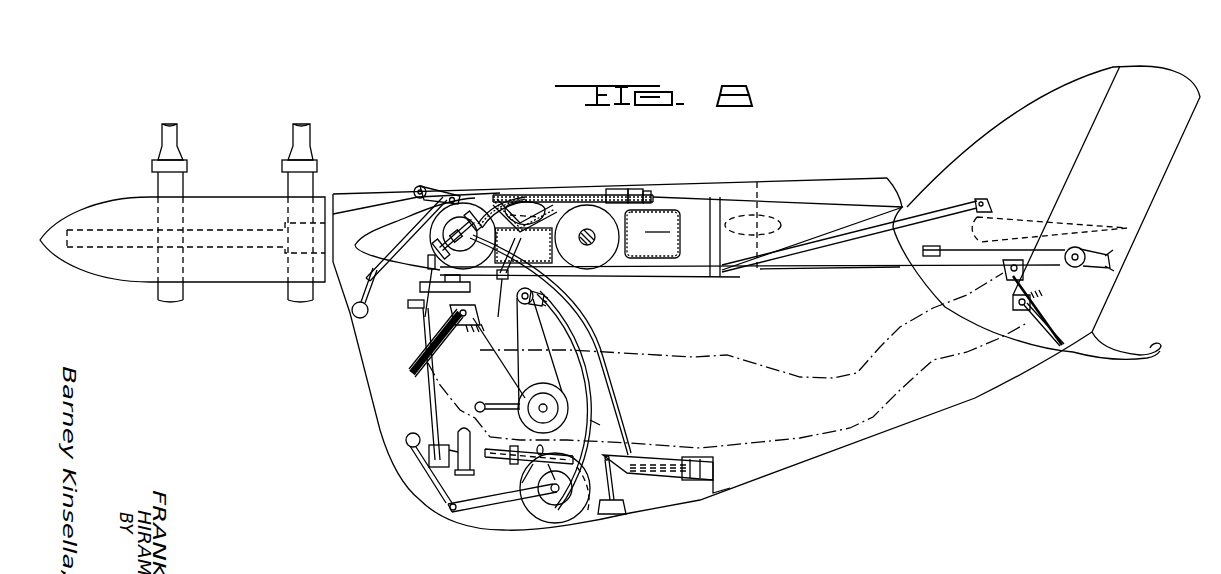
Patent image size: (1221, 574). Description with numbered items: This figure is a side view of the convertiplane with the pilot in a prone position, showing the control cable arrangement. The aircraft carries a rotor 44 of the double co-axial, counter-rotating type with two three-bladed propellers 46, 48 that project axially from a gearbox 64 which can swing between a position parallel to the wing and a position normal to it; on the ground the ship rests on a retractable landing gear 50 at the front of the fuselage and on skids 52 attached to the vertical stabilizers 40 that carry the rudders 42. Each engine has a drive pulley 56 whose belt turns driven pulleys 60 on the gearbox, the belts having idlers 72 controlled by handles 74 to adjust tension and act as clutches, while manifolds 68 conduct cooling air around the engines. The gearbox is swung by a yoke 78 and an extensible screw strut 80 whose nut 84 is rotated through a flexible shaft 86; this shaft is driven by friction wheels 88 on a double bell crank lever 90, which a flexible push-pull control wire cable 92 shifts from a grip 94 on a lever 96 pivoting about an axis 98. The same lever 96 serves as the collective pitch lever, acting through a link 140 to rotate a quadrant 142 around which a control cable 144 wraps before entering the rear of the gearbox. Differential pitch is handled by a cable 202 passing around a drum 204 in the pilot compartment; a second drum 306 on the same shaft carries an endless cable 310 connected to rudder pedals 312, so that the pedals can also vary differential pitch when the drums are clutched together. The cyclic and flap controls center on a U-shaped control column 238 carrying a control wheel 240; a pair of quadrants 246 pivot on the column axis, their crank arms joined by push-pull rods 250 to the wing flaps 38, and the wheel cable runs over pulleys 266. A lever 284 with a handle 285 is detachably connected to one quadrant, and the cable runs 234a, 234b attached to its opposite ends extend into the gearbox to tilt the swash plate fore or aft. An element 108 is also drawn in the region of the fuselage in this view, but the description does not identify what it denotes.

The wing flaps 38 is at (1075, 225).
The vertical stabilizers 40 is at (985, 143).
The rudders 42 is at (1139, 220).
The rotor 44 is at (238, 191).
The propeller 46 is at (156, 153).
The propeller 48 is at (323, 159).
The retractable landing gear 50 is at (518, 506).
The skids 52 is at (1132, 359).
The drive pulley 56 is at (610, 241).
The driven pulleys 60 is at (435, 230).
The gearbox 64 is at (358, 213).
The manifolds 68 is at (662, 258).
The idlers 72 is at (538, 207).
The handles 74 is at (372, 280).
The yoke 78 is at (480, 190).
The extensible strut 80 is at (556, 194).
The nut 84 is at (620, 189).
The flexible shaft 86 is at (592, 195).
The friction wheels 88 is at (430, 256).
The double bell crank lever 90 is at (463, 202).
The flexible push-pull control wire cable 92 is at (574, 330).
The grip 94 is at (502, 450).
The lever 96 is at (583, 514).
The axis 98 is at (611, 503).
The shaft 108 is at (777, 217).
The link 140 is at (657, 457).
The quadrant 142 is at (685, 480).
The control cable 144 is at (614, 408).
The cable 202 is at (499, 365).
The drum 204 is at (598, 424).
The cable run 234a is at (484, 322).
The cable run 234b is at (432, 284).
The U-shaped control column 238 is at (430, 393).
The control wheel 240 is at (471, 462).
The quadrants 246 is at (442, 350).
The push-pull rods 250 is at (792, 252).
The pulleys 266 is at (480, 402).
The lever 284 is at (470, 315).
The handle 285 is at (424, 352).
The second drum 306 is at (553, 392).
The endless cable 310 is at (835, 276).
The rudder pedals 312 is at (1048, 320).